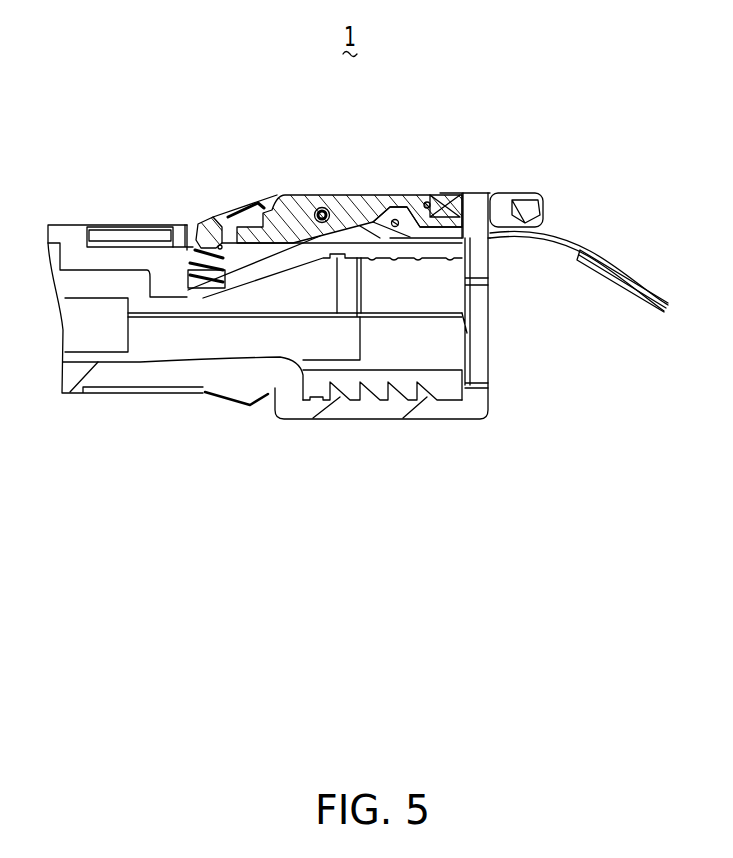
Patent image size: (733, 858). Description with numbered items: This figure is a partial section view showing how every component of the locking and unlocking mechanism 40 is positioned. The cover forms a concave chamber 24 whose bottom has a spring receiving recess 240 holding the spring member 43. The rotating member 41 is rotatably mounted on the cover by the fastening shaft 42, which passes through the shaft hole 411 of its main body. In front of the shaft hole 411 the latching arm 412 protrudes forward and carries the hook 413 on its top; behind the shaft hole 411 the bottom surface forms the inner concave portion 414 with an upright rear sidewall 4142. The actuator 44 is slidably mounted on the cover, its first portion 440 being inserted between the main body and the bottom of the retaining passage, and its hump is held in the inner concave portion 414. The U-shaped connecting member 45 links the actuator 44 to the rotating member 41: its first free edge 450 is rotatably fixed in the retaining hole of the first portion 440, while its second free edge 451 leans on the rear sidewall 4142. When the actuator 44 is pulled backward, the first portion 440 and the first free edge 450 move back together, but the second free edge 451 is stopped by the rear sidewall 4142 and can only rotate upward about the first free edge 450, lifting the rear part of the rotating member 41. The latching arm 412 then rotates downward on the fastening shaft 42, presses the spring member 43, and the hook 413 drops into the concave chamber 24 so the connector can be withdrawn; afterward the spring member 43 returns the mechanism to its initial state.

The concave chamber 24 is at (256, 238).
The locking and unlocking mechanism 40 is at (552, 235).
The rotating member 41 is at (295, 210).
The fastening shaft 42 is at (321, 208).
The spring member 43 is at (208, 275).
The actuator 44 is at (580, 252).
The U-shaped connecting member 45 is at (408, 216).
The spring receiving recess 240 is at (203, 283).
The shaft hole 411 is at (254, 405).
The latching arm 412 is at (202, 237).
The hook 413 is at (217, 240).
The inner concave portion 414 is at (392, 208).
The first portion 440 is at (436, 232).
The first free edge 450 is at (365, 228).
The second free edge 451 is at (428, 204).
The rear sidewall 4142 is at (463, 197).